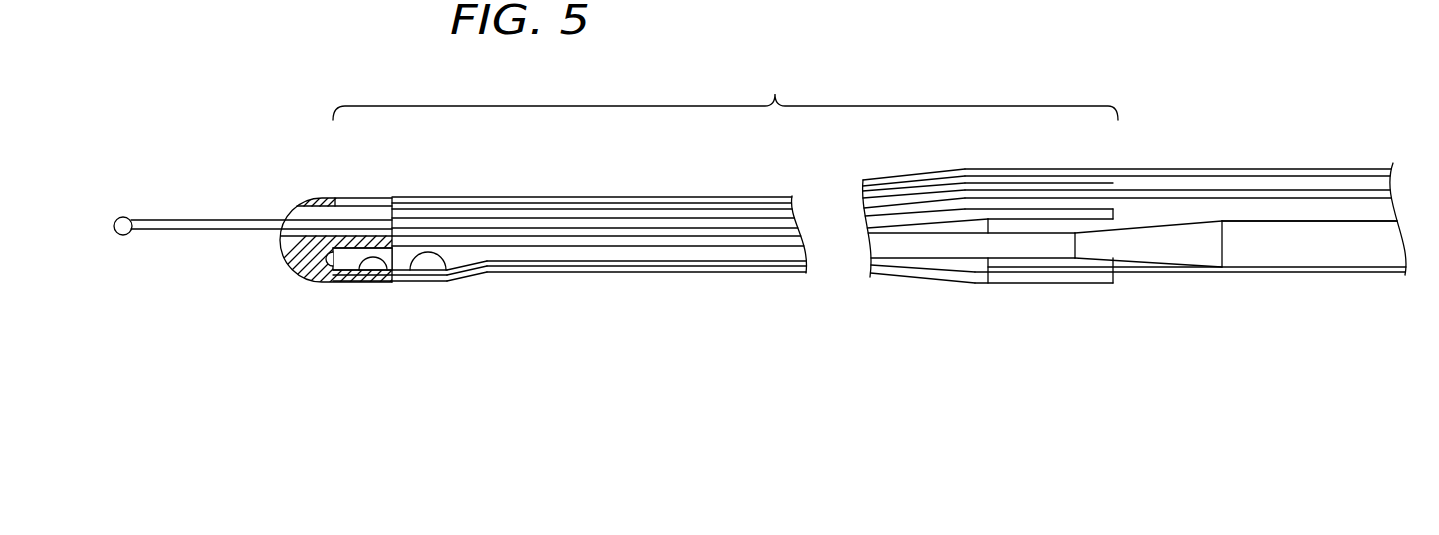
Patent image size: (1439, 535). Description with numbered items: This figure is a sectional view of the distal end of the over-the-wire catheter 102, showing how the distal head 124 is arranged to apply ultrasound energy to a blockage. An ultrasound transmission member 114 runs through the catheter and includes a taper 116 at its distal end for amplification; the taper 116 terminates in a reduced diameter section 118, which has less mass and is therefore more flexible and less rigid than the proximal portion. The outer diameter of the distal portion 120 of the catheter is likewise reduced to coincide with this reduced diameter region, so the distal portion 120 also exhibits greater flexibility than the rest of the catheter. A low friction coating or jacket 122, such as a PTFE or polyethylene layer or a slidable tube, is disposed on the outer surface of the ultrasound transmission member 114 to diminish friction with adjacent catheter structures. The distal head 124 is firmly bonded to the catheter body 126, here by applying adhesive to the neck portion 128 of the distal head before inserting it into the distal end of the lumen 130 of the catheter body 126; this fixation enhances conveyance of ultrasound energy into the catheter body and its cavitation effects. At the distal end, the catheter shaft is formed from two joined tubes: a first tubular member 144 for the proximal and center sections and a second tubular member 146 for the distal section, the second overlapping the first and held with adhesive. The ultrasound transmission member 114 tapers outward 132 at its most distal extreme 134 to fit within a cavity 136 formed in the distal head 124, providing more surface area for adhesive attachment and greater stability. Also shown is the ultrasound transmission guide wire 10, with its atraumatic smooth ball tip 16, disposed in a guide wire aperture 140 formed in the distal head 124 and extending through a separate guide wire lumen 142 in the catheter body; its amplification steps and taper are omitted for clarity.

The ultrasound transmission guide wire 10 is at (172, 220).
The atraumatic smooth ball tip 16 is at (127, 237).
The catheter 102 is at (1129, 77).
The ultrasound transmission member 114 is at (1320, 273).
The taper 116 is at (1197, 260).
The reduced diameter section 118 is at (975, 262).
The distal portion 120 is at (725, 92).
The low friction coating or jacket 122 is at (1322, 243).
The distal head 124 is at (283, 263).
The catheter body 126 is at (627, 279).
The neck portion 128 is at (376, 207).
The lumen 130 is at (446, 270).
The outward taper 132 is at (487, 257).
The most distal extreme 134 is at (347, 258).
The cavity 136 is at (384, 276).
The guide wire aperture 140 is at (293, 201).
The guide wire lumen 142 is at (1119, 196).
The first tubular member 144 is at (1135, 273).
The second tubular member 146 is at (1098, 285).